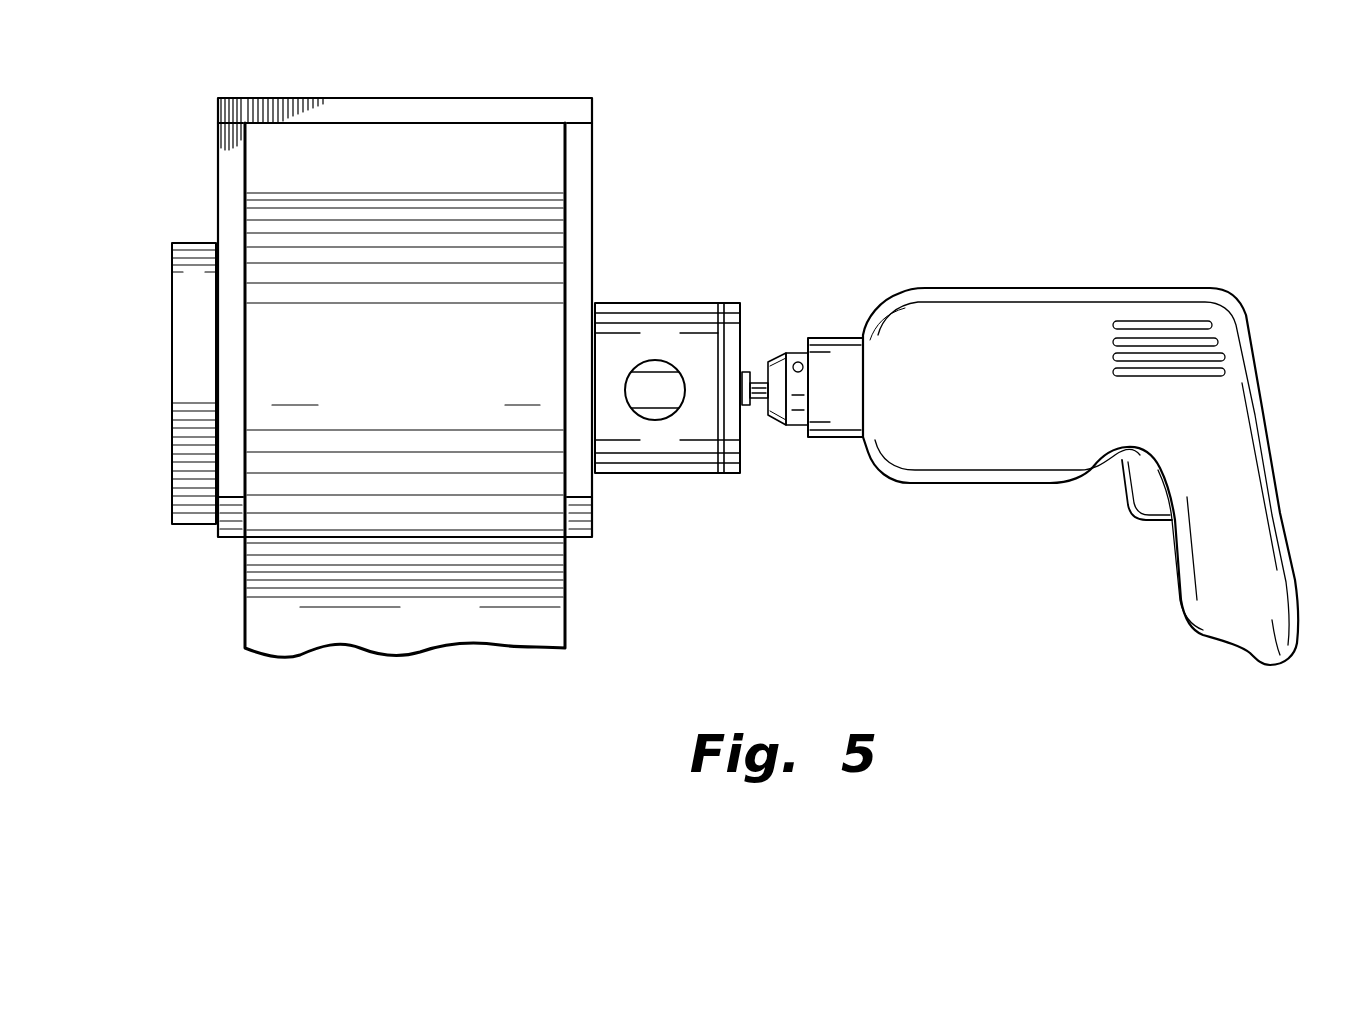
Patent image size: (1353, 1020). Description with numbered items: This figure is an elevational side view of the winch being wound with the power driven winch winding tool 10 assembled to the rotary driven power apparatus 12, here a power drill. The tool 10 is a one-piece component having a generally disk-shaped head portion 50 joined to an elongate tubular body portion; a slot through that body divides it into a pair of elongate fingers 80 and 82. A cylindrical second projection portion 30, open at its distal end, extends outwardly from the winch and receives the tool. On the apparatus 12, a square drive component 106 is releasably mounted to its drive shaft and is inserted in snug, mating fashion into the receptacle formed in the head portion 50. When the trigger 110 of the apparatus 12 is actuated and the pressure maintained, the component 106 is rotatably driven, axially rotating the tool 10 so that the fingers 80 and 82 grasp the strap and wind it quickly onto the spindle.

The power driven winch winding tool 10 is at (750, 351).
The rotary driven power apparatus 12 is at (1033, 413).
The second projection portion 30 is at (653, 303).
The head portion 50 is at (742, 372).
The elongate finger 80 is at (662, 368).
The elongate finger 82 is at (660, 413).
The square drive component 106 is at (768, 362).
The trigger 110 is at (1130, 505).